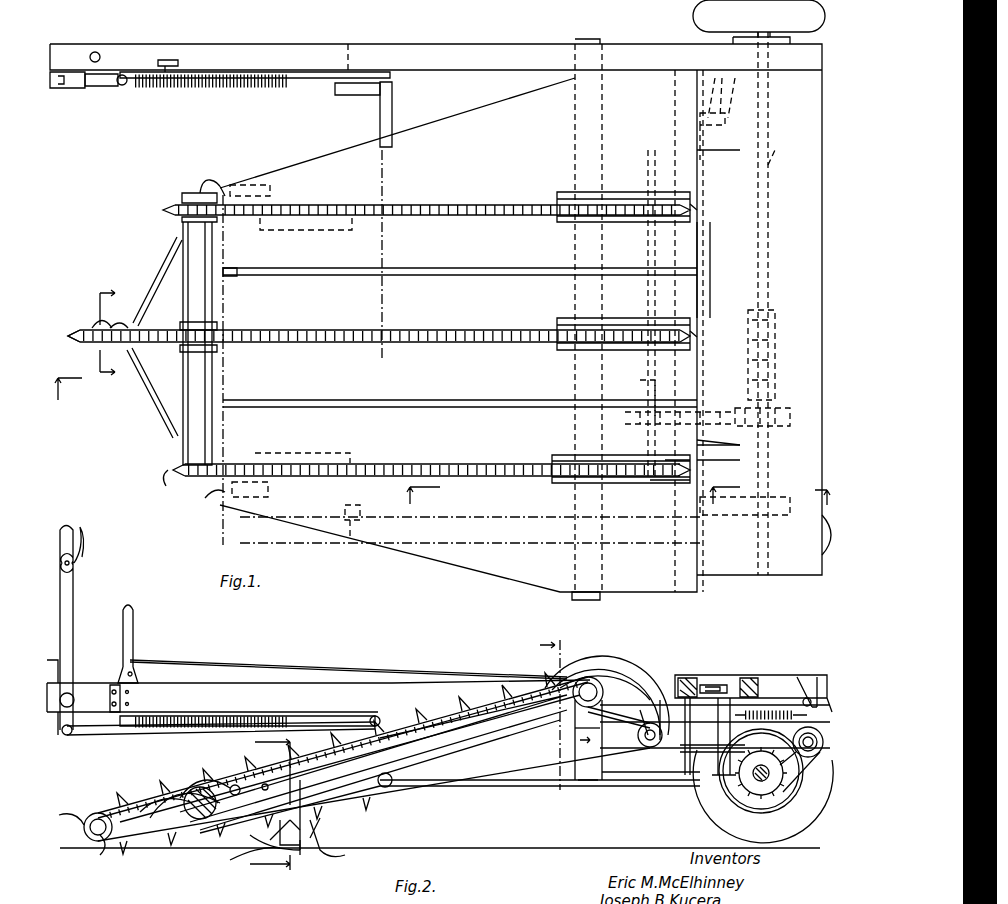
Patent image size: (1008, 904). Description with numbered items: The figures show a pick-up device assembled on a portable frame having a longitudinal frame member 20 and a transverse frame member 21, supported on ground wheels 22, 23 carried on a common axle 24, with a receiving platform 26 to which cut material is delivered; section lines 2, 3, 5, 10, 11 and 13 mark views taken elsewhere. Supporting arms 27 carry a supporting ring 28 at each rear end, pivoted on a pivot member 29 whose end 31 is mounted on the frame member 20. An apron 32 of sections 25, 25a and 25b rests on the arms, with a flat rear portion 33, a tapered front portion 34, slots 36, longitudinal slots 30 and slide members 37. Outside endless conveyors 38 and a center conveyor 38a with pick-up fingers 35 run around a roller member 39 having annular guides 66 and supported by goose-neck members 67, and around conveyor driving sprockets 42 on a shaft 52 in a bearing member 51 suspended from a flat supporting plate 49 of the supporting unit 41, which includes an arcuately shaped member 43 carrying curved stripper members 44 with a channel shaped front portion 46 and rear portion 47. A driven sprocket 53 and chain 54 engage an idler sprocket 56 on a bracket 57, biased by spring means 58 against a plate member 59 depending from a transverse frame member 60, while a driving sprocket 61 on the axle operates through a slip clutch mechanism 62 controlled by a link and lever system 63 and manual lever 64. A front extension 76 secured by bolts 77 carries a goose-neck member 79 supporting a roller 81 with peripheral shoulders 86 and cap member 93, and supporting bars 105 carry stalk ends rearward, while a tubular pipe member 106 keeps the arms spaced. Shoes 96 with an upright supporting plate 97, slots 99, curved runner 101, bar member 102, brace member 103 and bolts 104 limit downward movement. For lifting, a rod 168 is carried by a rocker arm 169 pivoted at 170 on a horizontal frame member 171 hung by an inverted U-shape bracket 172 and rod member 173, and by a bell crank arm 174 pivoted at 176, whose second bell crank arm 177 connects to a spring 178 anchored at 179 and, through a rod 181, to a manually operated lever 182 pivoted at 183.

In FIG. 1, the longitudinal frame member 20 is at (501, 37).
In FIG. 2, the longitudinal frame member 20 is at (325, 683).
In FIG. 1, the end of pivot member 31 is at (603, 42).
In FIG. 1, the bell crank pivot 176 is at (348, 44).
In FIG. 1, the second bell crank arm 177 is at (376, 78).
In FIG. 2, the second bell crank arm 177 is at (378, 716).
In FIG. 1, the spring 178 is at (210, 87).
In FIG. 2, the spring 178 is at (205, 716).
In FIG. 1, the bell crank arm 174 is at (363, 96).
In FIG. 1, the rod 168 is at (393, 116).
In FIG. 2, the rod 168 is at (392, 778).
In FIG. 1, the manual lever 64 is at (170, 58).
In FIG. 2, the manual lever 64 is at (136, 632).
In FIG. 1, the manually operated lever 182 is at (66, 90).
In FIG. 2, the manually operated lever 182 is at (78, 605).
In FIG. 1, the rod 181 is at (100, 88).
In FIG. 2, the rod 181 is at (90, 736).
In FIG. 1, the spring attachment point 179 is at (122, 86).
In FIG. 2, the spring attachment point 179 is at (135, 707).
In FIG. 1, the transverse frame member 21 is at (690, 135).
In FIG. 2, the transverse frame member 21 is at (693, 677).
In FIG. 1, the end apron section 25b is at (700, 138).
In FIG. 1, the common axle 24 is at (780, 160).
In FIG. 2, the common axle 24 is at (770, 790).
In FIG. 1, the receiving platform 26 is at (788, 301).
In FIG. 2, the receiving platform 26 is at (772, 675).
In FIG. 1, the link and lever system 63 is at (719, 256).
In FIG. 1, the center apron section 25a is at (690, 300).
In FIG. 1, the slip clutch mechanism 62 is at (776, 403).
In FIG. 1, the driving sprocket 61 is at (775, 428).
In FIG. 2, the driving sprocket 61 is at (752, 790).
In FIG. 1, the driven sprocket 53 is at (640, 418).
In FIG. 1, the chain 54 is at (705, 452).
In FIG. 2, the chain 54 is at (705, 756).
In FIG. 1, the shaft 52 is at (648, 372).
In FIG. 2, the shaft 52 is at (640, 750).
In FIG. 1, the conveyor driving sprockets 42 is at (690, 470).
In FIG. 2, the conveyor driving sprockets 42 is at (640, 739).
In FIG. 1, the end apron section 25 is at (721, 456).
In FIG. 1, the ground wheel 22 is at (819, 550).
In FIG. 1, the section line 2 is at (443, 441).
In FIG. 1, the section line 11 is at (593, 505).
In FIG. 1, the longitudinal slots 30 is at (440, 268).
In FIG. 1, the apron 32 is at (515, 244).
In FIG. 2, the apron 32 is at (500, 712).
In FIG. 1, the front portion of apron 34 is at (338, 379).
In FIG. 1, the tubular pipe member 106 is at (238, 268).
In FIG. 1, the center conveyor 38a is at (415, 330).
In FIG. 2, the center conveyor 38a is at (395, 710).
In FIG. 1, the outside endless conveyors 38 is at (428, 464).
In FIG. 1, the pick-up fingers 35 is at (500, 330).
In FIG. 2, the pick-up fingers 35 is at (440, 700).
In FIG. 1, the curved stripper members 44 is at (612, 193).
In FIG. 2, the curved stripper members 44 is at (600, 652).
In FIG. 1, the slot 36 is at (690, 215).
In FIG. 1, the roller member 39 is at (205, 428).
In FIG. 2, the roller member 39 is at (198, 788).
In FIG. 1, the goose-neck members 67 is at (204, 186).
In FIG. 1, the annular guides 66 is at (172, 480).
In FIG. 1, the supporting bars 105 is at (160, 270).
In FIG. 2, the supporting bars 105 is at (182, 788).
In FIG. 1, the goose-neck member 79 is at (115, 310).
In FIG. 2, the goose-neck member 79 is at (115, 852).
In FIG. 1, the section line 13 is at (97, 331).
In FIG. 1, the roller 81 is at (78, 328).
In FIG. 1, the shoes 96 is at (321, 240).
In FIG. 2, the shoes 96 is at (341, 831).
In FIG. 1, the rocker arm pivot 170 is at (345, 522).
In FIG. 2, the rocker arm pivot 170 is at (340, 810).
In FIG. 1, the rocker arm 169 is at (352, 540).
In FIG. 2, the rocker arm 169 is at (410, 769).
In FIG. 1, the horizontal frame member 171 is at (510, 535).
In FIG. 2, the horizontal frame member 171 is at (495, 790).
In FIG. 1, the pivot member 29 is at (588, 600).
In FIG. 2, the pivot member 29 is at (590, 678).
In FIG. 1, the rear portion of apron 33 is at (662, 590).
In FIG. 2, the rear portion of apron 33 is at (665, 672).
In FIG. 2, the lever pivot 183 is at (72, 695).
In FIG. 2, the cap member 93 is at (92, 838).
In FIG. 2, the peripheral shoulders 86 is at (90, 816).
In FIG. 2, the slide members 37 is at (490, 690).
In FIG. 2, the supporting arms 27 is at (480, 737).
In FIG. 2, the supporting ring 28 is at (575, 716).
In FIG. 2, the inverted U-shape bracket 172 is at (568, 757).
In FIG. 2, the rod member 173 is at (651, 765).
In FIG. 2, the channel shaped front portion 46 is at (545, 644).
In FIG. 2, the section line 5 is at (570, 675).
In FIG. 2, the section line 3 is at (590, 742).
In FIG. 2, the flat supporting plate 49 is at (587, 726).
In FIG. 2, the bearing member 51 is at (640, 720).
In FIG. 2, the arcuately shaped member 43 is at (650, 665).
In FIG. 2, the supporting unit 41 is at (640, 670).
In FIG. 2, the rear portion of stripper member 47 is at (668, 714).
In FIG. 2, the plate member 59 is at (725, 683).
In FIG. 2, the transverse frame member 60 is at (752, 677).
In FIG. 2, the spring means 58 is at (760, 710).
In FIG. 2, the bracket 57 is at (807, 692).
In FIG. 2, the ground wheel 23 is at (705, 800).
In FIG. 2, the idler sprocket 56 is at (810, 760).
In FIG. 2, the front extension 76 is at (205, 822).
In FIG. 2, the bolts 77 is at (245, 790).
In FIG. 2, the upright supporting plate 97 is at (300, 818).
In FIG. 2, the slots 99 is at (275, 835).
In FIG. 2, the bar member 102 is at (252, 840).
In FIG. 2, the bolts 104 is at (247, 867).
In FIG. 2, the section line 10 is at (266, 803).
In FIG. 2, the brace member 103 is at (312, 858).
In FIG. 2, the curved runner 101 is at (330, 852).